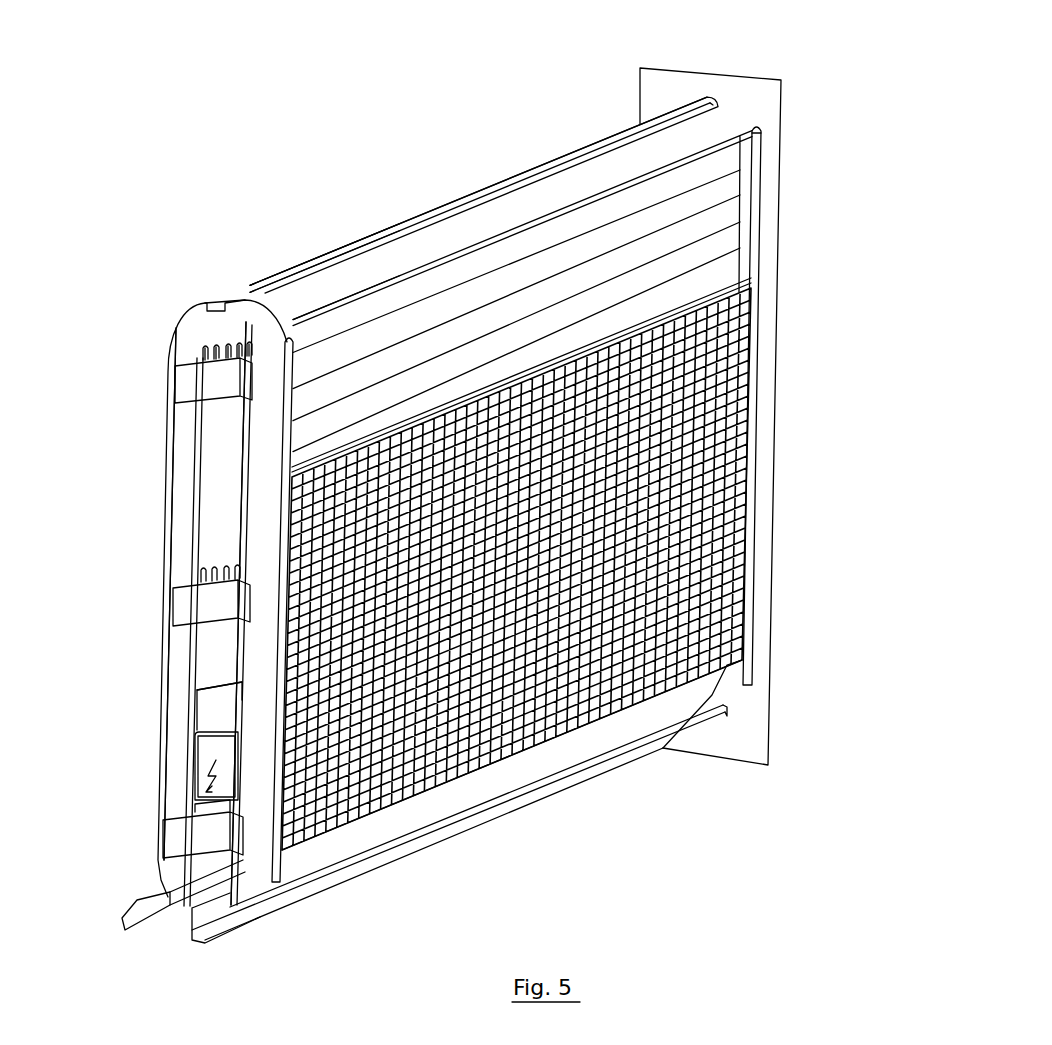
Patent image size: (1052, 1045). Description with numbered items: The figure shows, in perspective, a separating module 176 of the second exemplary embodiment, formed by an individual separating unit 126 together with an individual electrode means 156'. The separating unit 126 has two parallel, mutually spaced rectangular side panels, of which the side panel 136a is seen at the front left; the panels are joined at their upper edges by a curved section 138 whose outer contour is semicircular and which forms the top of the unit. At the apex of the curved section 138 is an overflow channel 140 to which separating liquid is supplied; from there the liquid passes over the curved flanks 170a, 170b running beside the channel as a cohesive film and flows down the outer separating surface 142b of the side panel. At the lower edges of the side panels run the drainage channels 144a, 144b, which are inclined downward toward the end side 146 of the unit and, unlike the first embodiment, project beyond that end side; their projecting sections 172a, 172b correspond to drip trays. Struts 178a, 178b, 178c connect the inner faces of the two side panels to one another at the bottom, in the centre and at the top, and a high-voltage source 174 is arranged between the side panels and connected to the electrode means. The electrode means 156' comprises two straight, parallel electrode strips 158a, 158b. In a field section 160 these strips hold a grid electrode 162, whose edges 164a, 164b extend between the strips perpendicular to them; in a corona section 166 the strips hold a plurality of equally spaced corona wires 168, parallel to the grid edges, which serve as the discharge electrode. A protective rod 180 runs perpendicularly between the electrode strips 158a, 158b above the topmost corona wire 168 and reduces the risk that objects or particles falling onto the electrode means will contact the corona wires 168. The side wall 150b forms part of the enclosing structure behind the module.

The separating unit 126 is at (338, 92).
The separating module 176 is at (427, 92).
The curved section 138 is at (690, 130).
The side wall 150b is at (740, 95).
The curved flank 170b is at (567, 188).
The overflow channel 140 is at (498, 182).
The corona wires 168 is at (756, 163).
The filter frame 156' is at (763, 458).
The electrode strip 158a is at (278, 322).
The electrode strip 158b is at (756, 272).
The grid electrode 162 is at (722, 430).
The edge of grid electrode 164a is at (305, 475).
The edge of grid electrode 164b is at (540, 755).
The separating surface 142b is at (348, 330).
The protective rod 180 is at (398, 285).
The curved flank 170a is at (290, 280).
The strut 178a is at (195, 830).
The strut 178b is at (178, 598).
The strut 178c is at (195, 380).
The corona section 166 is at (258, 397).
The side panel 136a is at (176, 553).
The field section 160 is at (258, 656).
The end side 146 is at (236, 686).
The high-voltage source 174 is at (205, 745).
The projecting section 172a is at (165, 891).
The projecting section 172b is at (215, 915).
The drainage channel 144a is at (150, 914).
The drainage channel 144b is at (455, 828).